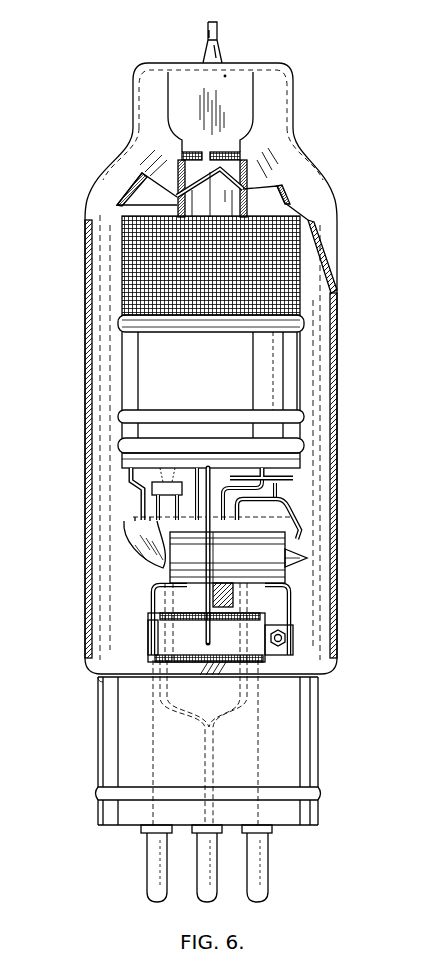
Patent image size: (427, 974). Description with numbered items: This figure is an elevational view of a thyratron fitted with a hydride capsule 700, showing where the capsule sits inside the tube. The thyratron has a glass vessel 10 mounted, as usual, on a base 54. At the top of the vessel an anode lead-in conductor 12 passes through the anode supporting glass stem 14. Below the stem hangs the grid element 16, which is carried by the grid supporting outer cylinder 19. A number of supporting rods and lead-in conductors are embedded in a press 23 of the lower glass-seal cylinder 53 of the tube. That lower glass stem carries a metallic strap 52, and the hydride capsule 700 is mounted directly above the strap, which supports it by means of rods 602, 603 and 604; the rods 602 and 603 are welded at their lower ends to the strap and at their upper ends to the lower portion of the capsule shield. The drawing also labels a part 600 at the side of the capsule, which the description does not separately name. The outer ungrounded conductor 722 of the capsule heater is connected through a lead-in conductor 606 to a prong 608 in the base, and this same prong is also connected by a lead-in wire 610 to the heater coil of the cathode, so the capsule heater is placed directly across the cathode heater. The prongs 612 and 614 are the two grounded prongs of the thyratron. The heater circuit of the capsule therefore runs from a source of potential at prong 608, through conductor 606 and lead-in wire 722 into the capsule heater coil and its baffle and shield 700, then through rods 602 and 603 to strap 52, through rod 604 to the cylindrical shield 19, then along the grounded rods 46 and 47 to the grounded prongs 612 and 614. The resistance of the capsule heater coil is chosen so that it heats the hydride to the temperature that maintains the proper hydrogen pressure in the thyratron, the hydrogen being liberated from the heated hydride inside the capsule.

The glass vessel 10 is at (293, 176).
The anode lead-in conductor 12 is at (217, 32).
The anode supporting glass stem 14 is at (243, 107).
The grid element 16 is at (297, 278).
The grid supporting outer cylinder 19 is at (280, 368).
The press 23 is at (170, 562).
The grounded rod 46 is at (297, 478).
The grounded rod 47 is at (147, 507).
The metallic strap 52 is at (293, 647).
The lower glass-seal cylinder 53 is at (227, 677).
The base 54 is at (295, 747).
The electron emitter tip 600 is at (303, 572).
The rod 602 is at (152, 602).
The rod 603 is at (267, 611).
The rod 604 is at (212, 606).
The lead-in conductor 606 is at (227, 675).
The prong 608 is at (205, 890).
The lead-in wire 610 is at (190, 714).
The grounded prong 612 is at (153, 883).
The grounded prong 614 is at (263, 887).
The hydride capsule 700 is at (183, 550).
The outer ungrounded conductor of the heater 722 is at (317, 537).